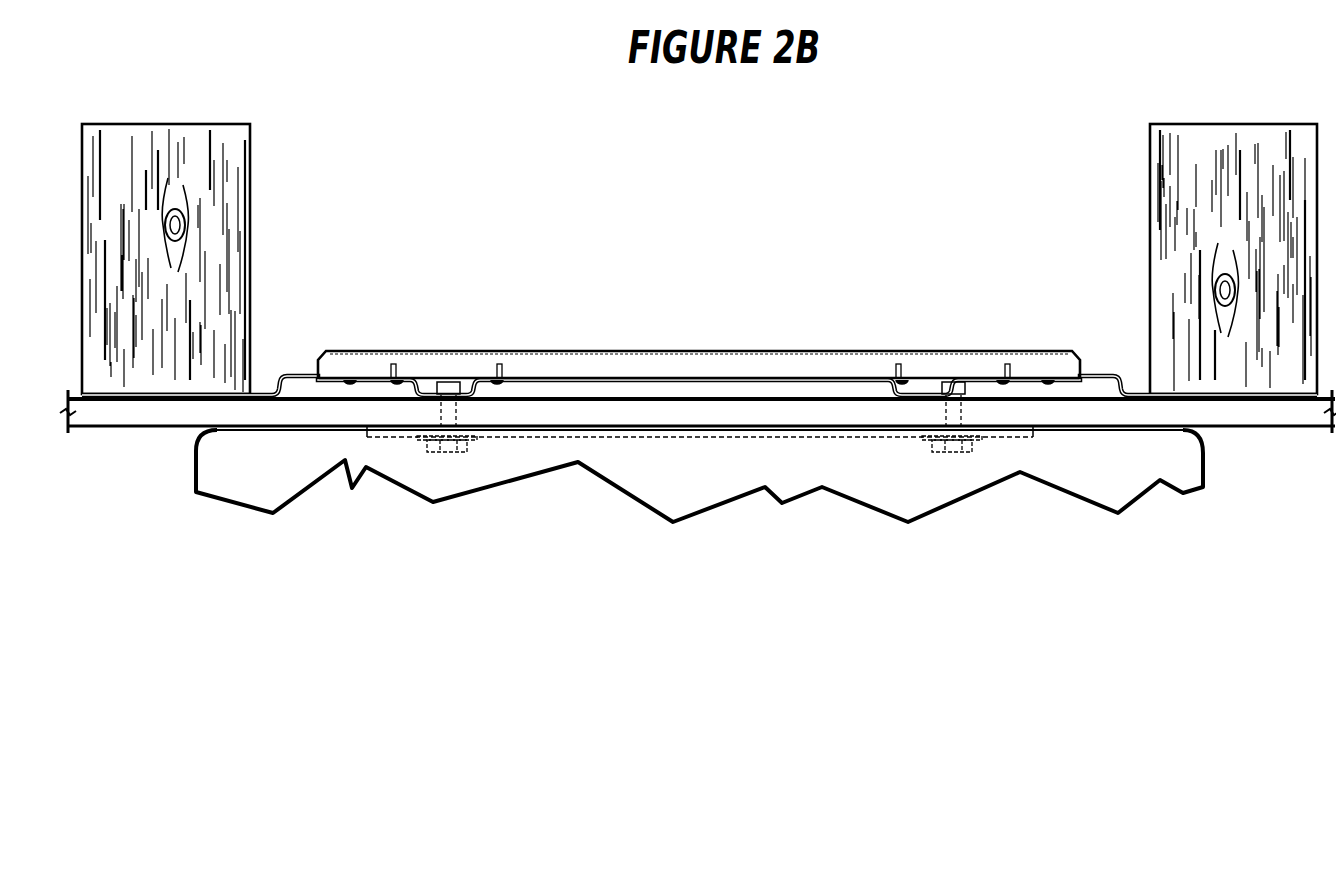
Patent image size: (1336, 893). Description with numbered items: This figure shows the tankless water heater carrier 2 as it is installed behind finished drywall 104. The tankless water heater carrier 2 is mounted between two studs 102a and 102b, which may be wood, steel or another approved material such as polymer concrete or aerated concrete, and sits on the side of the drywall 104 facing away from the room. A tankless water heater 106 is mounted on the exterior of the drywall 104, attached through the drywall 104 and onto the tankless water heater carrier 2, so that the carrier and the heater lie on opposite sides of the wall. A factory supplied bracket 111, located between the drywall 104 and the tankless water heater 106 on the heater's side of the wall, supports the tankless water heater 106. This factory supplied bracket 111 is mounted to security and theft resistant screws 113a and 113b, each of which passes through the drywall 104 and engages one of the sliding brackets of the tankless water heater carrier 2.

The tankless water heater carrier 2 is at (869, 274).
The stud 102a is at (250, 244).
The stud 102b is at (1150, 244).
The drywall 104 is at (1270, 428).
The tankless water heater 106 is at (1205, 475).
The factory supplied bracket 111 is at (625, 437).
The security and theft resistant screw 113a is at (447, 455).
The security and theft resistant screw 113b is at (953, 455).